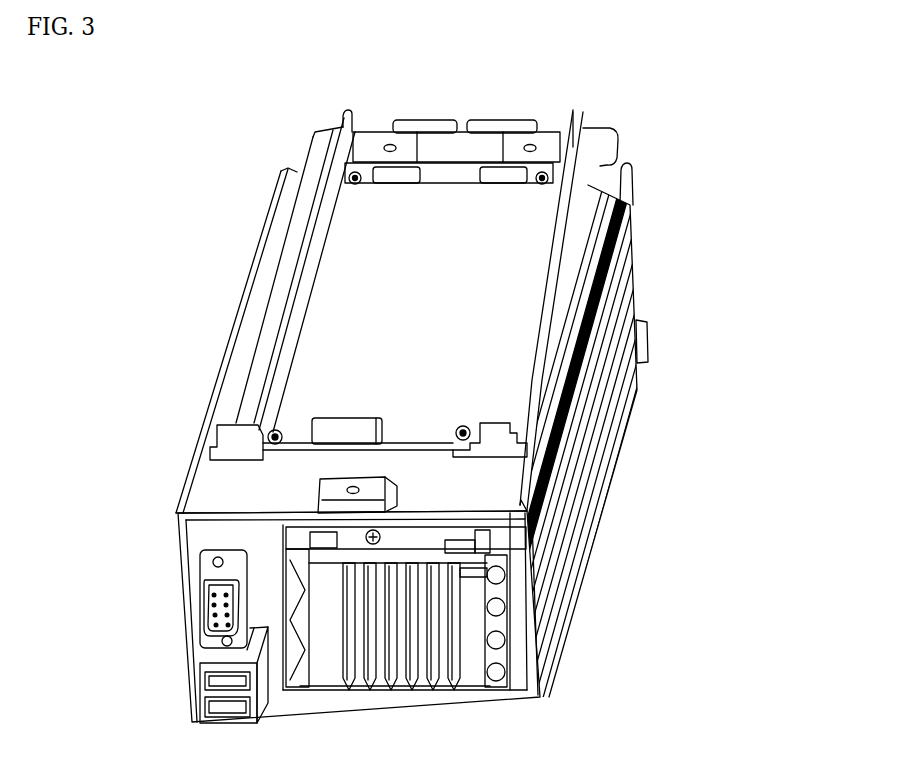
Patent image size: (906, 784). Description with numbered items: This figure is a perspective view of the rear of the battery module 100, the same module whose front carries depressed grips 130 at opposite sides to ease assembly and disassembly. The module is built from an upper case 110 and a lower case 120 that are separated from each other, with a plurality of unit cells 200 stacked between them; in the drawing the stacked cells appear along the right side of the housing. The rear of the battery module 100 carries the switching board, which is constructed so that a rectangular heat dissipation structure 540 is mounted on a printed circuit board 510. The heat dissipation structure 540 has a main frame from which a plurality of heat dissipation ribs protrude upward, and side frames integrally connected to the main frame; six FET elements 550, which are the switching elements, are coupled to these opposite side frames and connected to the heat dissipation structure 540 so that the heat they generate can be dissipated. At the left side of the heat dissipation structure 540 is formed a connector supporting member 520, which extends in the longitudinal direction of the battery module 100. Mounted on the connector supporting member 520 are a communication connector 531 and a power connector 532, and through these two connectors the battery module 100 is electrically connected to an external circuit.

The battery module 100 is at (70, 128).
The upper case 110 is at (630, 213).
The lower case 120 is at (613, 467).
The depressed grips 130 is at (308, 157).
The unit cells 200 is at (643, 336).
The printed circuit board 510 is at (542, 545).
The connector supporting member 520 is at (180, 556).
The communication connector 531 is at (205, 610).
The power connector 532 is at (207, 690).
The heat dissipation structure 540 is at (452, 692).
The FET elements 550 is at (510, 673).